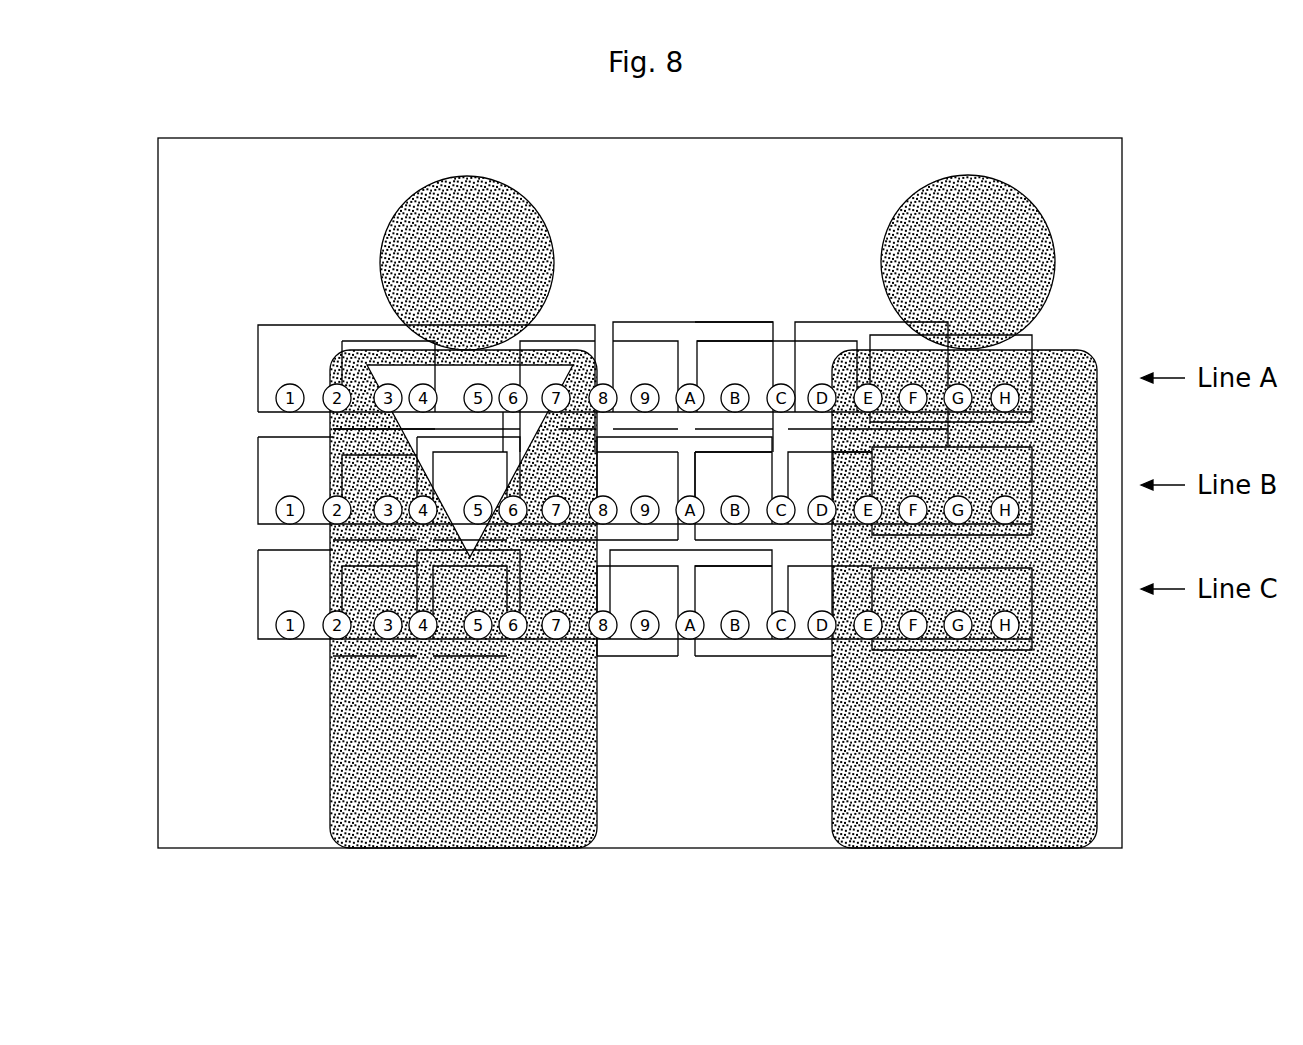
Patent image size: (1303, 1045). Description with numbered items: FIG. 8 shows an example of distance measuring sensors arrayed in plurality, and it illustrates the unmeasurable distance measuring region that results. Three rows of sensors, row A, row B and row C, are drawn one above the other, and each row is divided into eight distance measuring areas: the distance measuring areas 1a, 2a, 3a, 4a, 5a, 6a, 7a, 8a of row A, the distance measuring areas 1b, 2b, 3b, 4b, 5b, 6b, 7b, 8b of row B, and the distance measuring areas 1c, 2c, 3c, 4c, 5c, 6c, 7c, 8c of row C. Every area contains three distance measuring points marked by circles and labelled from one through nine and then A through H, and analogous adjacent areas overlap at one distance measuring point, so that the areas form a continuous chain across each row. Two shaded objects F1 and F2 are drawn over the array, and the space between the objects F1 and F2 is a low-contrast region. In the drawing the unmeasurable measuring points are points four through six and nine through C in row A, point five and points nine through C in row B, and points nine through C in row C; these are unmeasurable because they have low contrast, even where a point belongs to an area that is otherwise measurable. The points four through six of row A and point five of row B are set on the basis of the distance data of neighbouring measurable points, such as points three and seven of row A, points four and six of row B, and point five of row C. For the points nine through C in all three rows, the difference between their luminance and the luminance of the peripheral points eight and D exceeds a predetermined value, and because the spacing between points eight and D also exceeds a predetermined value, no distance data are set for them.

The distance measuring area 1a is at (256, 378).
The distance measuring area 1b is at (256, 487).
The distance measuring area 1c is at (256, 598).
The distance measuring area 2a is at (333, 431).
The distance measuring area 2b is at (333, 542).
The distance measuring area 2c is at (333, 658).
The distance measuring area 3a is at (565, 322).
The distance measuring area 3b is at (437, 445).
The distance measuring area 3c is at (507, 640).
The distance measuring area 4a is at (630, 322).
The distance measuring area 4b is at (610, 445).
The distance measuring area 4c is at (632, 658).
The distance measuring area 5a is at (657, 338).
The distance measuring area 5b is at (710, 445).
The distance measuring area 5c is at (682, 644).
The distance measuring area 6a is at (740, 322).
The distance measuring area 6b is at (792, 445).
The distance measuring area 6c is at (745, 658).
The distance measuring area 7a is at (823, 322).
The distance measuring area 7b is at (868, 450).
The distance measuring area 7c is at (835, 660).
The distance measuring area 8a is at (1036, 332).
The distance measuring area 8b is at (1031, 444).
The distance measuring area 8c is at (1031, 568).
The object F1 is at (508, 182).
The object F2 is at (1008, 172).